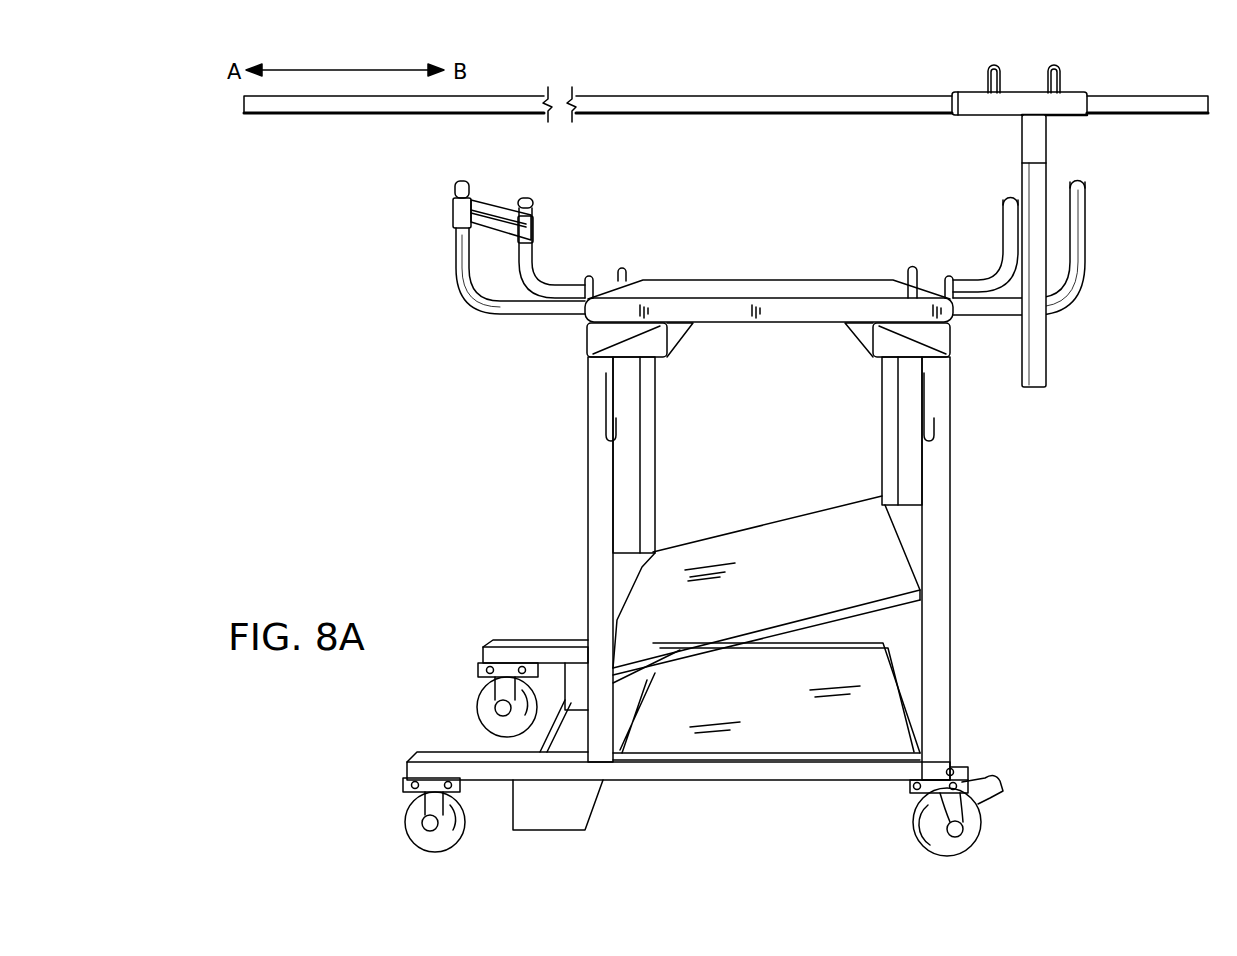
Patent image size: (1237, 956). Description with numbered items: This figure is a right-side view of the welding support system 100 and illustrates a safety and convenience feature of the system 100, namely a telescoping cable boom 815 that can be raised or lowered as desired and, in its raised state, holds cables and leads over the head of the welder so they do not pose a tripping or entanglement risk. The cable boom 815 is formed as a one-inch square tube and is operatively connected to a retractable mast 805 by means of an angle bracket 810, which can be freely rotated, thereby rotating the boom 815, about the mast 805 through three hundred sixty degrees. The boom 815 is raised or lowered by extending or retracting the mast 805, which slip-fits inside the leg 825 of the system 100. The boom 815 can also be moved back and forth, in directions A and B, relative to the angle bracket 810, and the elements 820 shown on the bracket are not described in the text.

The welding support system 100 is at (318, 289).
The retractable mast 805 is at (1037, 228).
The angle bracket 810 is at (1063, 105).
The telescoping cable boom 815 is at (637, 97).
The retaining pins 820 is at (996, 63).
The leg 825 is at (936, 472).